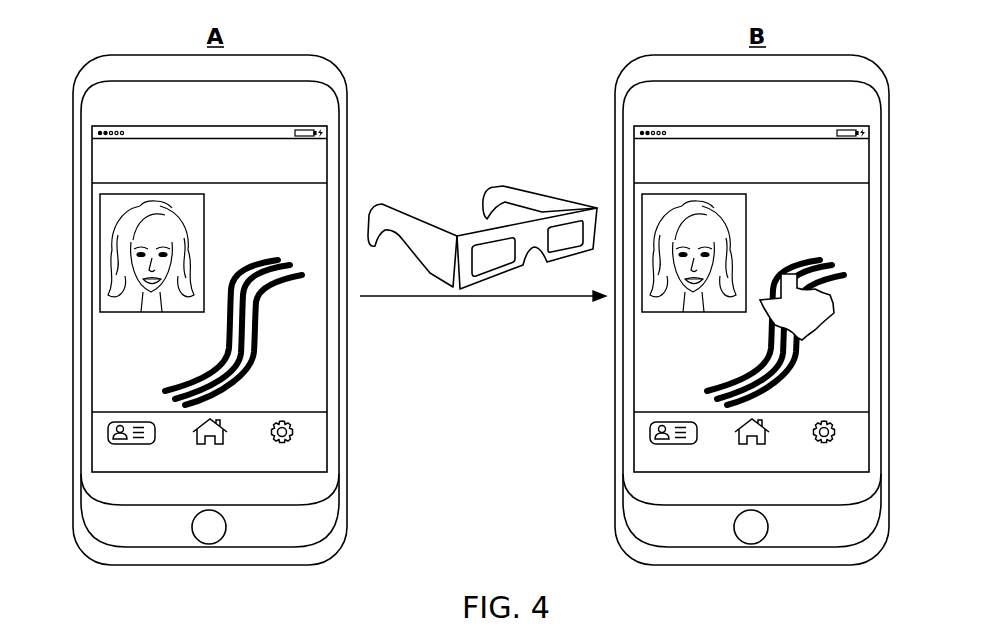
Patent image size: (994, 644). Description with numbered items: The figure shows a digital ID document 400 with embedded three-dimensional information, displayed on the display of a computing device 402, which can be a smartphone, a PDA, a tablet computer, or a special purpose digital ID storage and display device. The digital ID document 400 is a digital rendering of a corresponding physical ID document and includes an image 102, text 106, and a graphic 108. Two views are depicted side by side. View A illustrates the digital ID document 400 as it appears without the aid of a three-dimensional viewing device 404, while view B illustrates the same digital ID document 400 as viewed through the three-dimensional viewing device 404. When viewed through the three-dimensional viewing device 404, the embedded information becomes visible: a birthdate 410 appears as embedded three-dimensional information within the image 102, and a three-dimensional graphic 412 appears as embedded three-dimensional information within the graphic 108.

The digital ID document 400 is at (297, 178).
The computing device 402 is at (326, 63).
The image 102 is at (100, 242).
The text 106 is at (96, 374).
The graphic 108 is at (280, 283).
The 3D viewing device 404 is at (555, 197).
The birthdate 410 is at (717, 199).
The 3D graphic 412 is at (835, 310).